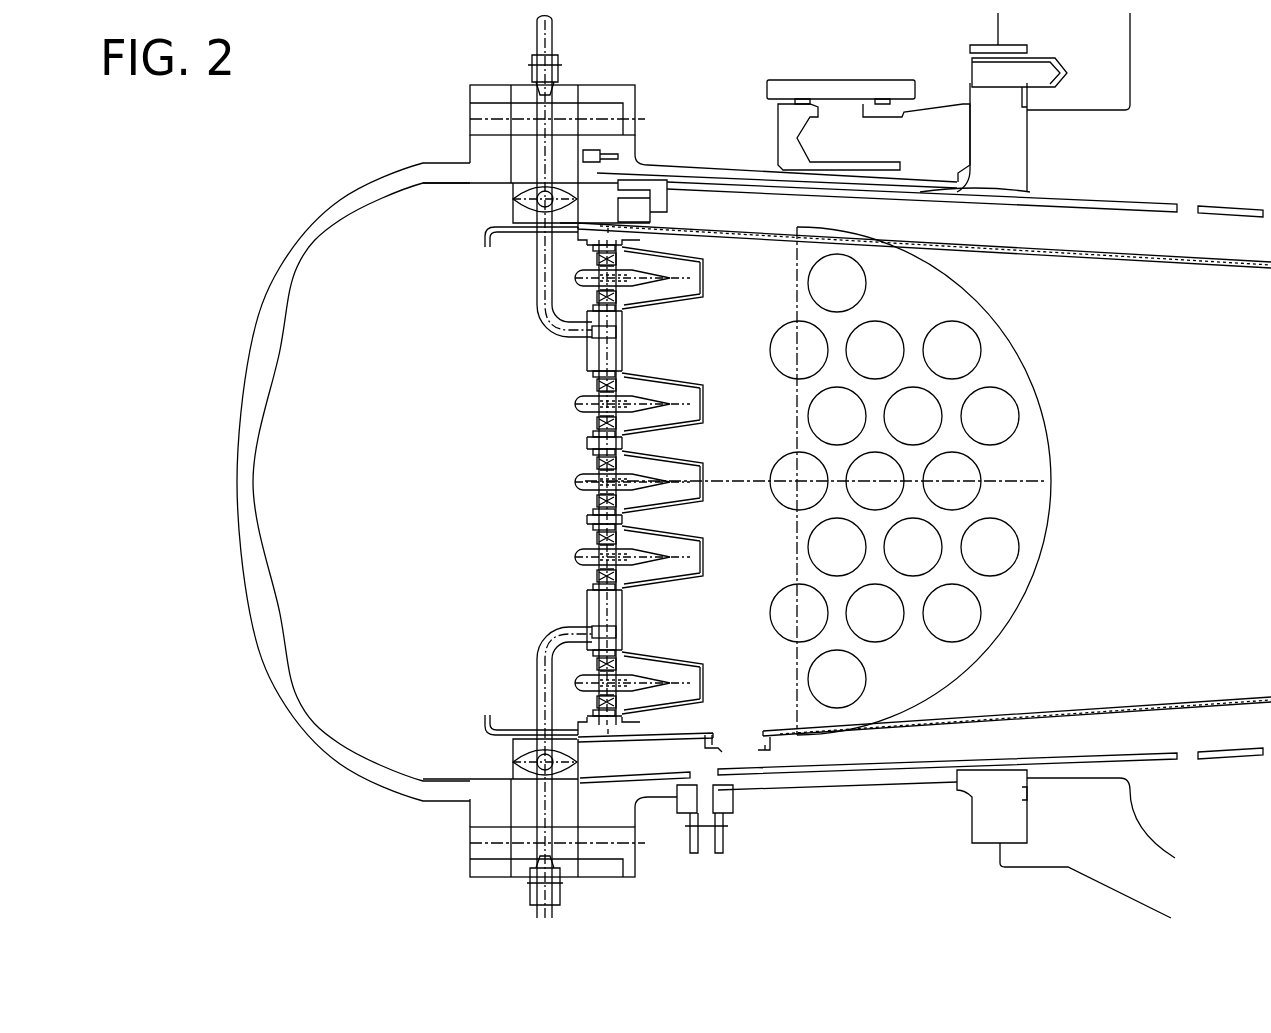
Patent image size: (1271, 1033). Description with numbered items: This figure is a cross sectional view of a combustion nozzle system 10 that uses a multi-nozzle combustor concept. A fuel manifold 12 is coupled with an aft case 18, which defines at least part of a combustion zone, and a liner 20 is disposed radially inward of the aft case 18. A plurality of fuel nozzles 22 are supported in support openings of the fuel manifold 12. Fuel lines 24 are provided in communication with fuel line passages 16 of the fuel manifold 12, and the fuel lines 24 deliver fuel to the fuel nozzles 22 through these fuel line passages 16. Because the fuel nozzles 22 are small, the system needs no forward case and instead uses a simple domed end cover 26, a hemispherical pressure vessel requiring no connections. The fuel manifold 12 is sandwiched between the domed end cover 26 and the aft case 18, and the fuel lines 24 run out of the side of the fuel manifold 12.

The combustion nozzle system 10 is at (230, 282).
The fuel manifold 12 is at (604, 612).
The fuel line passages 16 is at (620, 332).
The aft case 18 is at (808, 778).
The liner 20 is at (1083, 253).
The fuel nozzles 22 is at (578, 427).
The fuel lines 24 is at (548, 114).
The domed end cover 26 is at (238, 456).